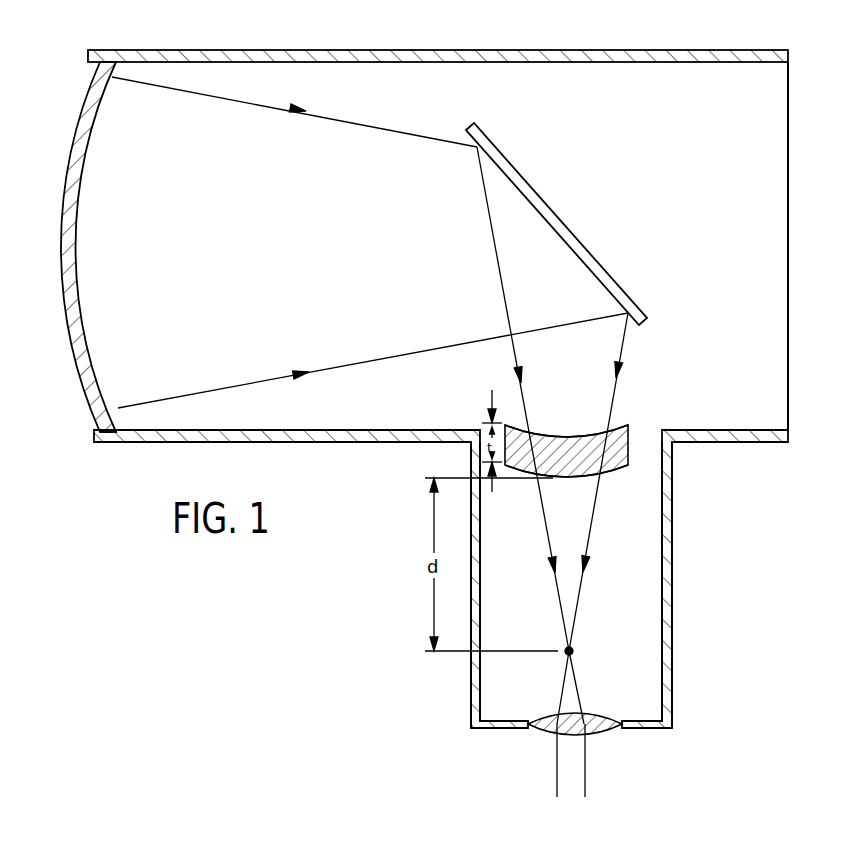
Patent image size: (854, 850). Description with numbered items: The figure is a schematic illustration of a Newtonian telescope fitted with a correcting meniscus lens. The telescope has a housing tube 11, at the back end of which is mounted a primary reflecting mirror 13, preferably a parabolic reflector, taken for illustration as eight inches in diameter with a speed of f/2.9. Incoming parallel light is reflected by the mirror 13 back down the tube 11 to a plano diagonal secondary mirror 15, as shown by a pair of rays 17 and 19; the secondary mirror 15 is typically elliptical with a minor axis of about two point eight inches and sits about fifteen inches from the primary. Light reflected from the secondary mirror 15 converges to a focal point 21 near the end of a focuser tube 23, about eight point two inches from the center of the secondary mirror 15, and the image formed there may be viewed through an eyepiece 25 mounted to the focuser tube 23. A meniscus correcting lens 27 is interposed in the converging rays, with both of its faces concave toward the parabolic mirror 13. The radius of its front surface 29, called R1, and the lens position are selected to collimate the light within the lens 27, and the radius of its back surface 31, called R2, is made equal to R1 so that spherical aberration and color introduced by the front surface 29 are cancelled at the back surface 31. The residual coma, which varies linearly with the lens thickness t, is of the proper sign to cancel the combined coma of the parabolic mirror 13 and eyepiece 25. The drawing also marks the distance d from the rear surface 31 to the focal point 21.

The housing tube 11 is at (404, 50).
The primary reflecting mirror 13 is at (73, 128).
The plano diagonal secondary mirror 15 is at (568, 228).
The ray 17 is at (306, 109).
The ray 19 is at (353, 365).
The focal point 21 is at (576, 651).
The focuser tube 23 is at (672, 594).
The eyepiece 25 is at (602, 735).
The meniscus correcting lens 27 is at (628, 448).
The front surface 29 is at (618, 426).
The back surface 31 is at (620, 470).